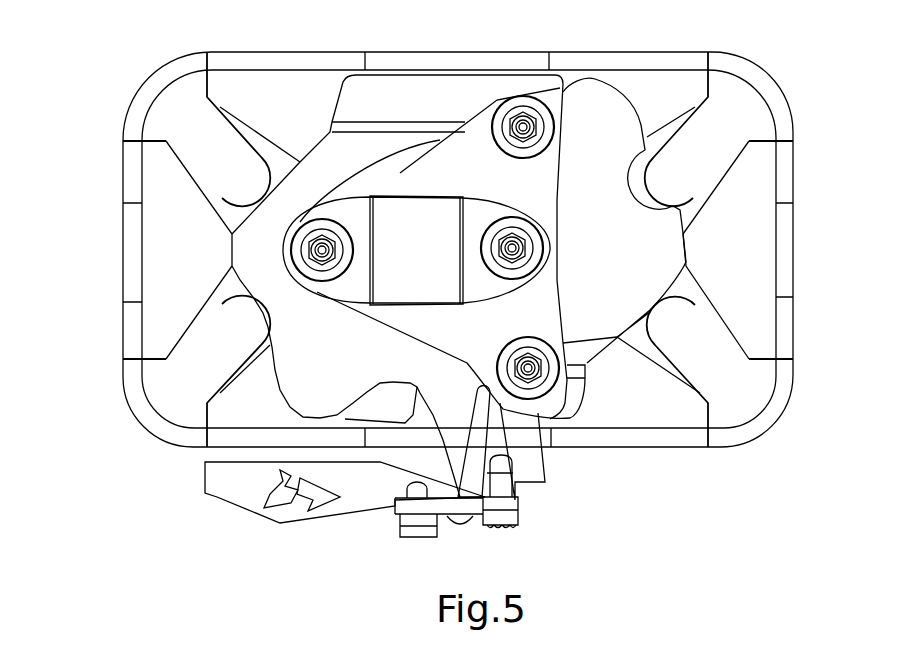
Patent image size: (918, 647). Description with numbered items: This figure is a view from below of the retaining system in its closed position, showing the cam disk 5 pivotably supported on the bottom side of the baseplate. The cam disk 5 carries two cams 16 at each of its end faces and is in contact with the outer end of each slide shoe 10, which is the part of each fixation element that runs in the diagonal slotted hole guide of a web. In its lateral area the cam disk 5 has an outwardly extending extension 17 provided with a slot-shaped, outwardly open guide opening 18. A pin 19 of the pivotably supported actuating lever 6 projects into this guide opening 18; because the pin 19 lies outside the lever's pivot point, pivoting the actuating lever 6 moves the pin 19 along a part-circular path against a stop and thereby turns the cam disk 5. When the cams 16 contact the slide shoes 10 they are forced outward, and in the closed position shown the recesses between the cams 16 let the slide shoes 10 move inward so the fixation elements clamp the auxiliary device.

The cam disk 5 is at (316, 325).
The actuating lever 6 is at (248, 497).
The slide shoe 10 is at (232, 176).
The cam 16 is at (635, 97).
The extension 17 is at (523, 446).
The guide opening 18 is at (490, 445).
The pin 19 is at (500, 512).